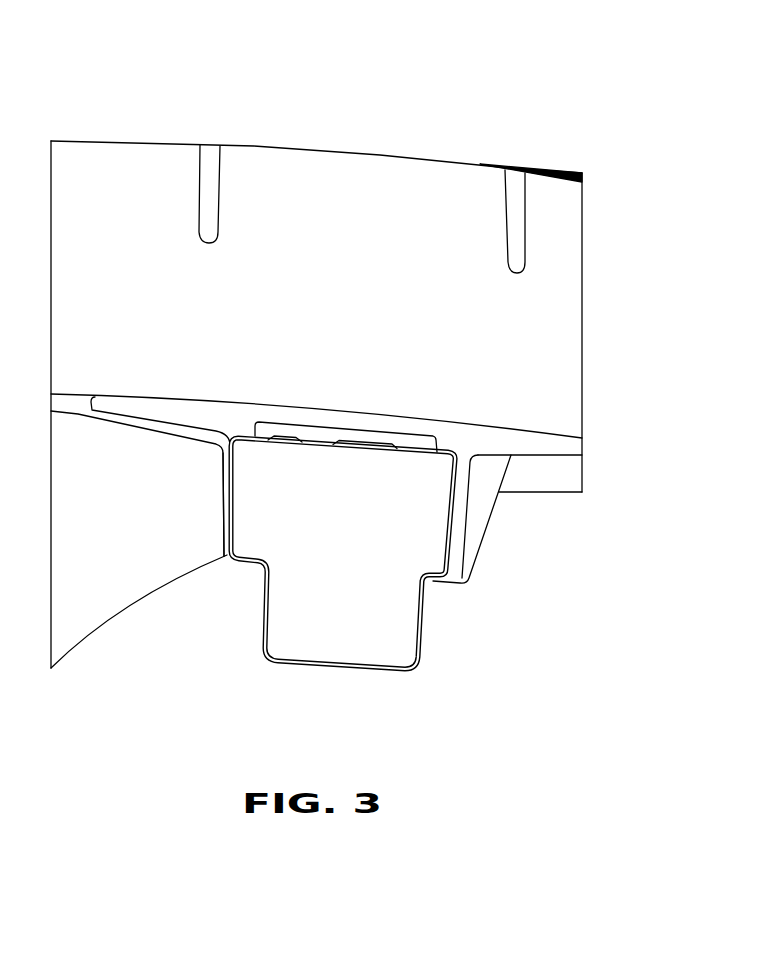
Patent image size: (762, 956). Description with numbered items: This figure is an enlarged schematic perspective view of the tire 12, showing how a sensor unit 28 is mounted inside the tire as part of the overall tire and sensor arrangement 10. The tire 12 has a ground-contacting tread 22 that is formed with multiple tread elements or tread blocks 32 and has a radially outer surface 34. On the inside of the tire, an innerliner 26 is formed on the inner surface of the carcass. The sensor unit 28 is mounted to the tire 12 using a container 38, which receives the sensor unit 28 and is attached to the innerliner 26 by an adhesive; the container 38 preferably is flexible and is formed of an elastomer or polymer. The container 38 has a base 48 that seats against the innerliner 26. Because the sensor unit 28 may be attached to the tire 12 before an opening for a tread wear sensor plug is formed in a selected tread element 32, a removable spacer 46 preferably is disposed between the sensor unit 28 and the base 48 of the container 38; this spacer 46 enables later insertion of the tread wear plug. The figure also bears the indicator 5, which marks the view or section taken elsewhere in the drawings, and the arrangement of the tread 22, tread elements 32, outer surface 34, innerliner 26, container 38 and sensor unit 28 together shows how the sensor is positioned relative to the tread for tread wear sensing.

The vehicle trim assembly 10 is at (631, 69).
The tire 12 is at (564, 169).
The tread 22 is at (167, 144).
The tread element 32 is at (292, 172).
The radially outer surface 34 is at (466, 163).
The removable spacer 46 is at (415, 437).
The innerliner 26 is at (82, 397).
The container 38 is at (480, 447).
The sensor unit 28 is at (322, 672).
The base 48 is at (349, 426).
The section indicator 5 is at (754, 293).